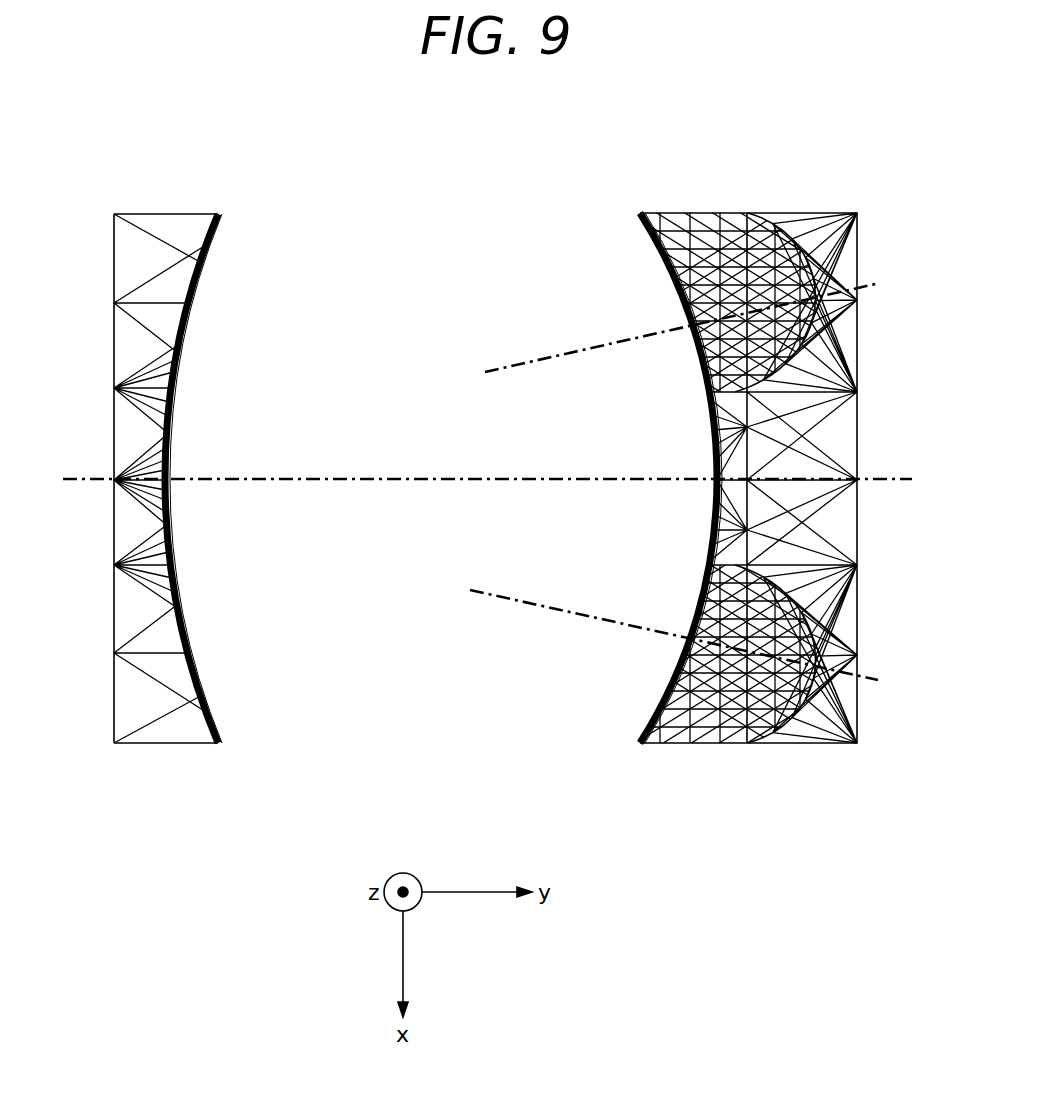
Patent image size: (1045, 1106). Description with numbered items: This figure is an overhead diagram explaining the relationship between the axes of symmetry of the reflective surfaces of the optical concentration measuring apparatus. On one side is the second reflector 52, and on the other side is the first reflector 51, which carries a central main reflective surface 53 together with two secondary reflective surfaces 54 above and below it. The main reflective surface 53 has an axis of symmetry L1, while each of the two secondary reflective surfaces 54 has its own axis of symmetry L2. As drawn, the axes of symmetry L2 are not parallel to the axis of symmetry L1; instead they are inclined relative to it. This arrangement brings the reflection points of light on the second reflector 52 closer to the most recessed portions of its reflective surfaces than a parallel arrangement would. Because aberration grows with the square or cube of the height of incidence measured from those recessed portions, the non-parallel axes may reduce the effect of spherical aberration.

The first reflector 51 is at (522, 493).
The second reflector 52 is at (114, 258).
The main reflective surface 53 is at (700, 436).
The secondary reflective surfaces 54 is at (703, 240).
The axis of symmetry of the main reflective surface L1 is at (278, 479).
The axes of symmetry of the secondary reflective surfaces L2 is at (533, 356).